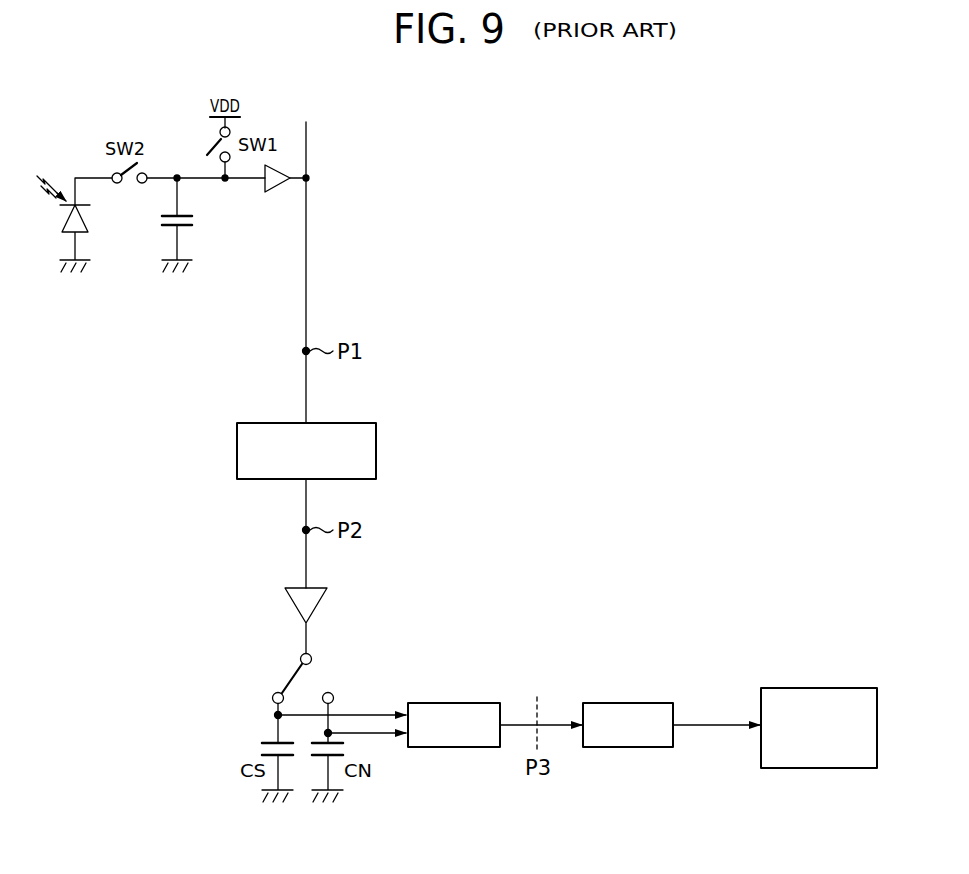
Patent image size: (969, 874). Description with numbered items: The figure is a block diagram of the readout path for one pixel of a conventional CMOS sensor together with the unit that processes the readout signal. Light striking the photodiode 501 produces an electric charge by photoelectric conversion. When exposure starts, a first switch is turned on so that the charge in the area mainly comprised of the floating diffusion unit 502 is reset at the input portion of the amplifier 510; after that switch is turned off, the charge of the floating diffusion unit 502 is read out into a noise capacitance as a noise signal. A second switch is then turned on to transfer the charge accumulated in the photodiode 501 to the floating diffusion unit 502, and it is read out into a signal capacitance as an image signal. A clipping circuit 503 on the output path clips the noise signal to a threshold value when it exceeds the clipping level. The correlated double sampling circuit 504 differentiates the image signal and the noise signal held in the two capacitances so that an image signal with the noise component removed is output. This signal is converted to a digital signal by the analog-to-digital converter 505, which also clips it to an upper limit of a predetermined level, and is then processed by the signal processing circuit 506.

The photodiode (PD) 501 is at (115, 233).
The floating diffusion unit (FD) 502 is at (215, 233).
The clipping circuit 503 is at (237, 453).
The correlated double sampling (CDS) circuit 504 is at (453, 701).
The analog-to-digital (A/D) converter 505 is at (625, 701).
The signal processing circuit 506 is at (821, 688).
The amplifier 510 is at (277, 193).